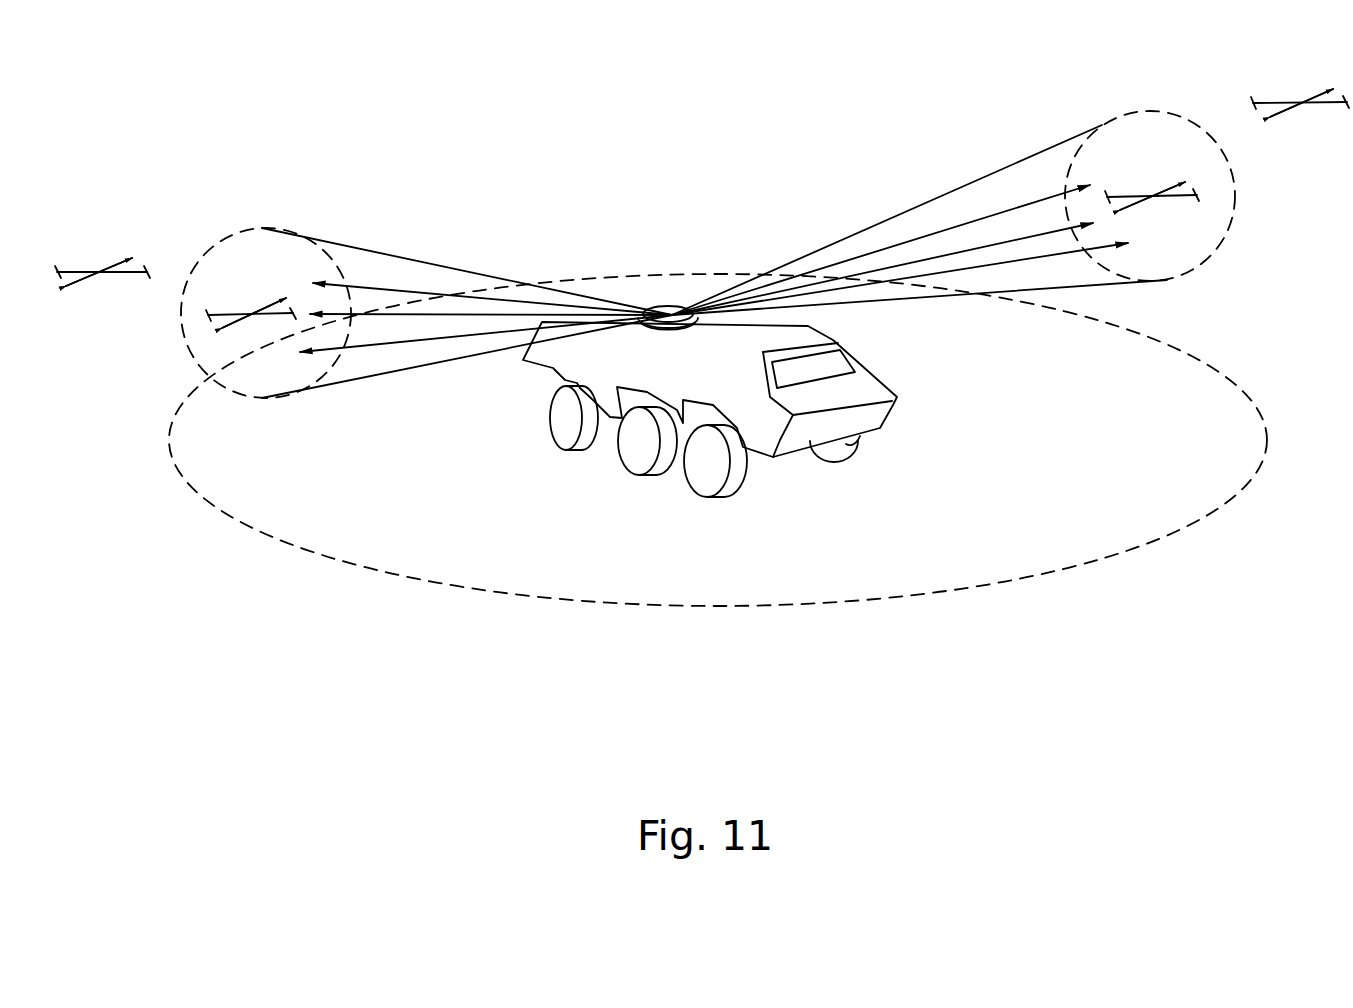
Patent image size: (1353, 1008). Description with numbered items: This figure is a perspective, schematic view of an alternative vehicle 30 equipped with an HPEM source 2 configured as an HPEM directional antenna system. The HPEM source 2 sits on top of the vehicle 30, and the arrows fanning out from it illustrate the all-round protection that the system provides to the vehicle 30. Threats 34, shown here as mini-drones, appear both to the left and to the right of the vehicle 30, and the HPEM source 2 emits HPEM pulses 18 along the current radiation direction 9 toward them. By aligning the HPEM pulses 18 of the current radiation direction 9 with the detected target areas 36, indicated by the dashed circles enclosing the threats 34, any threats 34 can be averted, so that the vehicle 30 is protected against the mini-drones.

The HPEM source 2 is at (672, 308).
The current radiation direction 9 is at (413, 297).
The HPEM pulses 18 is at (423, 257).
The vehicle 30 is at (792, 453).
The threats 34 is at (207, 317).
The target areas 36 is at (338, 264).